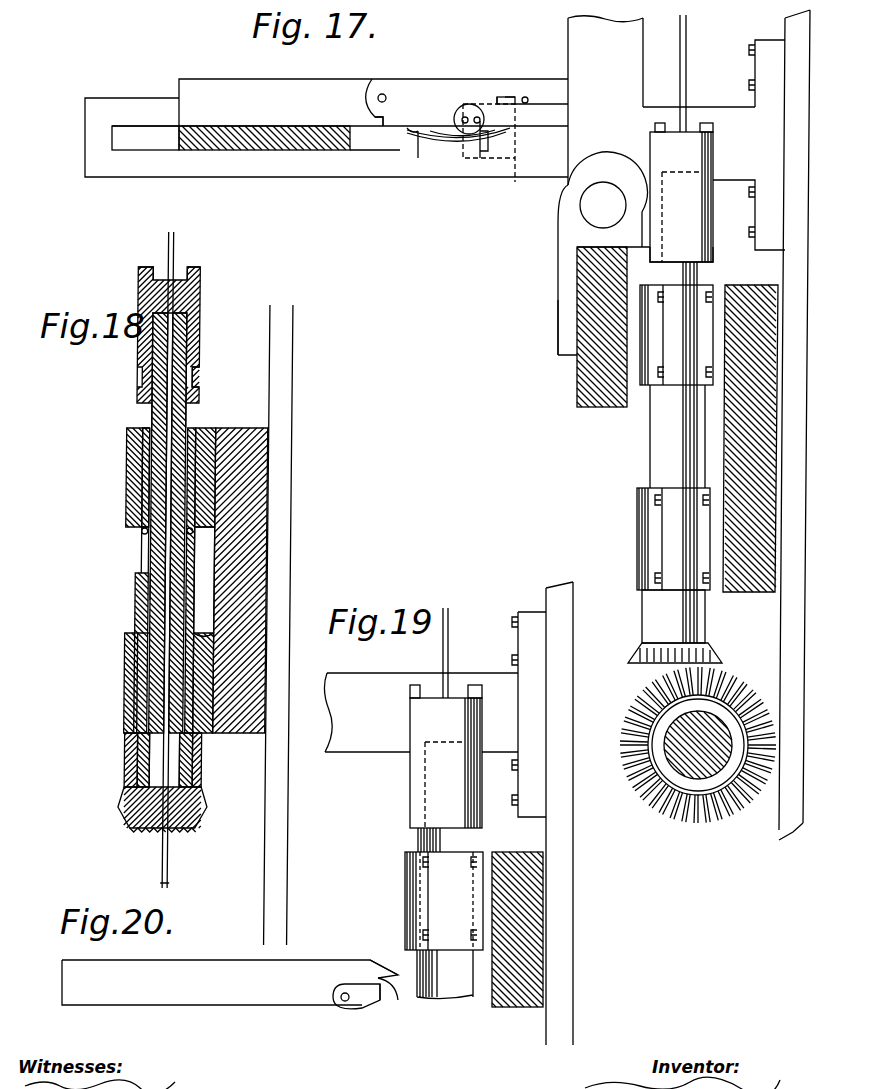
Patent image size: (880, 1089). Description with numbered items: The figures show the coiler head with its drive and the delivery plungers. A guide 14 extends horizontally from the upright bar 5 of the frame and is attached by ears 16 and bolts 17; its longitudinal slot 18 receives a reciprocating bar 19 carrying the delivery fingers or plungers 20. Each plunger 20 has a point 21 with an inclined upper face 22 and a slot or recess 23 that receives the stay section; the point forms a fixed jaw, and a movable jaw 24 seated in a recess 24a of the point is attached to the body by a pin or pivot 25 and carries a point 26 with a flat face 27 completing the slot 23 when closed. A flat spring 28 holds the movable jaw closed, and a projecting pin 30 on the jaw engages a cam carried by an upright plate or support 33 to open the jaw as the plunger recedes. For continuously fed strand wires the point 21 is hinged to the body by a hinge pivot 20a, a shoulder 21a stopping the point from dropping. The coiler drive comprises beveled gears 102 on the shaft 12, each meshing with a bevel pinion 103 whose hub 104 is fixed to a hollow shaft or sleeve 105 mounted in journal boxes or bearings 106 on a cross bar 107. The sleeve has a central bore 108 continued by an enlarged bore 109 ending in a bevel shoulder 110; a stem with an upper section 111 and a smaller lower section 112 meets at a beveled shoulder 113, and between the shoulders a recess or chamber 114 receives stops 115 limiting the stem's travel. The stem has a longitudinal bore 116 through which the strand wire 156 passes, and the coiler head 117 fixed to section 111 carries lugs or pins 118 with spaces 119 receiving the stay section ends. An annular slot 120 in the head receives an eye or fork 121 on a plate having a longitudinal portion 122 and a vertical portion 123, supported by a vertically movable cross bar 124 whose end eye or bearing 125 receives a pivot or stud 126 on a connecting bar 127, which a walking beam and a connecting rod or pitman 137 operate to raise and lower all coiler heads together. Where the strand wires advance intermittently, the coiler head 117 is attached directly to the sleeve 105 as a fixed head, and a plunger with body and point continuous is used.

In FIG. 17, the upright or vertical bar 5 is at (792, 125).
In FIG. 18, the upright or vertical bar 5 is at (294, 549).
In FIG. 19, the upright or vertical bar 5 is at (560, 980).
In FIG. 17, the shaft 12 is at (682, 766).
In FIG. 17, the guide 14 is at (112, 92).
In FIG. 19, the guide 14 is at (421, 712).
In FIG. 17, the ears 16 is at (761, 40).
In FIG. 19, the ears 16 is at (536, 612).
In FIG. 17, the bolts 17 is at (748, 85).
In FIG. 19, the bolts 17 is at (513, 660).
In FIG. 17, the longitudinal slot 18 is at (135, 145).
In FIG. 17, the bar 19 is at (290, 152).
In FIG. 17, the finger or plunger 20 is at (340, 114).
In FIG. 20, the finger or plunger 20 is at (230, 982).
In FIG. 17, the hinge pivot 20a is at (385, 93).
In FIG. 17, the point 21 is at (497, 102).
In FIG. 20, the point 21 is at (339, 992).
In FIG. 17, the shoulder 21a is at (400, 115).
In FIG. 17, the inclined upper face 22 is at (508, 97).
In FIG. 20, the inclined upper face 22 is at (387, 971).
In FIG. 17, the slot or recess 23 is at (516, 97).
In FIG. 20, the slot or recess 23 is at (398, 1001).
In FIG. 17, the movable jaw 24 is at (480, 140).
In FIG. 20, the recess 24a is at (360, 1001).
In FIG. 17, the pin or pivot 25 is at (456, 117).
In FIG. 17, the point 26 is at (503, 134).
In FIG. 17, the flat face 27 is at (510, 129).
In FIG. 17, the flat spring 28 is at (419, 138).
In FIG. 17, the projecting pin 30 is at (488, 108).
In FIG. 17, the upright plate or support 33 is at (494, 152).
In FIG. 17, the beveled gear 102 is at (640, 760).
In FIG. 17, the bevel pinion 103 is at (642, 658).
In FIG. 18, the bevel pinion 103 is at (207, 808).
In FIG. 17, the hub 104 is at (673, 616).
In FIG. 18, the hub 104 is at (200, 777).
In FIG. 17, the hollow shaft or sleeve 105 is at (650, 461).
In FIG. 18, the hollow shaft or sleeve 105 is at (144, 572).
In FIG. 19, the hollow shaft or sleeve 105 is at (420, 843).
In FIG. 17, the journal boxes or bearings 106 is at (675, 437).
In FIG. 18, the journal boxes or bearings 106 is at (128, 472).
In FIG. 19, the journal boxes or bearings 106 is at (405, 905).
In FIG. 17, the cross bar 107 is at (735, 421).
In FIG. 18, the cross bar 107 is at (269, 507).
In FIG. 19, the cross bar 107 is at (546, 935).
In FIG. 18, the central longitudinal bore 108 is at (152, 681).
In FIG. 18, the enlarged bore 109 is at (150, 497).
In FIG. 18, the bevel shoulder 110 is at (160, 582).
In FIG. 17, the upper section 111 is at (699, 287).
In FIG. 18, the upper section 111 is at (150, 407).
In FIG. 18, the lower section 112 is at (160, 602).
In FIG. 18, the beveled shoulder 113 is at (143, 529).
In FIG. 18, the recess or chamber 114 is at (125, 569).
In FIG. 18, the stops 115 is at (146, 547).
In FIG. 18, the longitudinal bore 116 is at (190, 412).
In FIG. 17, the coiler head 117 is at (681, 197).
In FIG. 18, the coiler head 117 is at (200, 303).
In FIG. 19, the coiler head 117 is at (446, 763).
In FIG. 17, the lugs or pins 118 is at (713, 130).
In FIG. 18, the lugs or pins 118 is at (200, 272).
In FIG. 19, the lugs or pins 118 is at (482, 697).
In FIG. 17, the space 119 is at (690, 131).
In FIG. 18, the space 119 is at (185, 277).
In FIG. 19, the space 119 is at (430, 691).
In FIG. 18, the annular or circumferential slot 120 is at (200, 380).
In FIG. 17, the eye or fork 121 is at (681, 245).
In FIG. 17, the longitudinal portion 122 is at (614, 237).
In FIG. 17, the vertical portion 123 is at (559, 347).
In FIG. 17, the cross bar 124 is at (598, 405).
In FIG. 17, the eye or bearing 125 is at (566, 196).
In FIG. 17, the pivot or stud 126 is at (603, 205).
In FIG. 17, the connecting bar 127 is at (661, 100).
In FIG. 17, the connecting rod or pitman 137 is at (529, 100).
In FIG. 17, the strand wires 156 is at (688, 52).
In FIG. 18, the strand wires 156 is at (176, 245).
In FIG. 19, the strand wires 156 is at (446, 651).